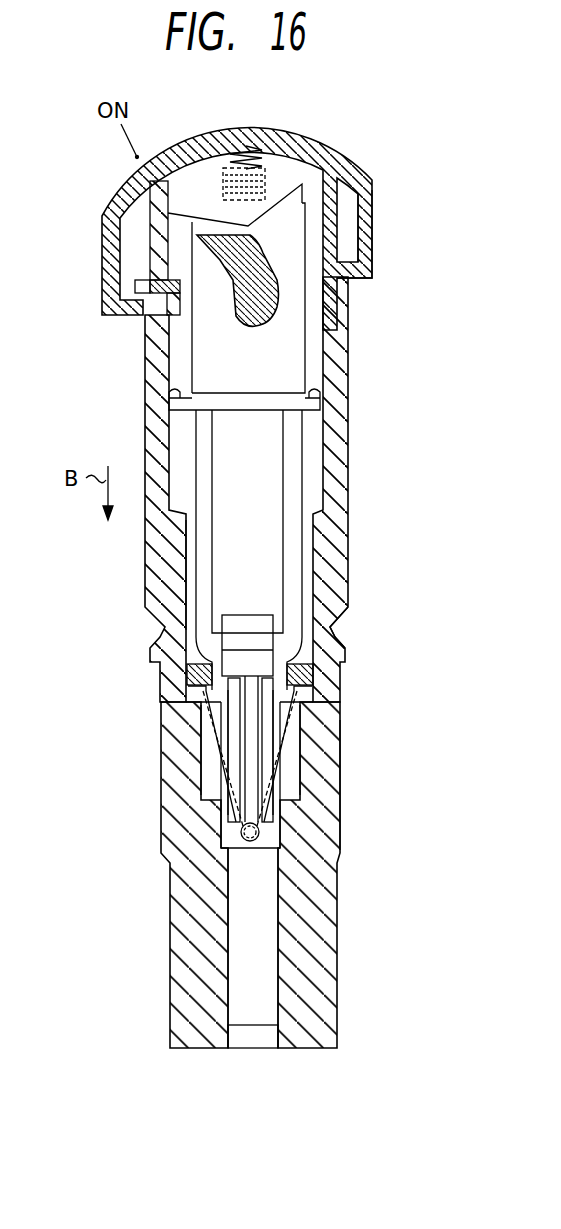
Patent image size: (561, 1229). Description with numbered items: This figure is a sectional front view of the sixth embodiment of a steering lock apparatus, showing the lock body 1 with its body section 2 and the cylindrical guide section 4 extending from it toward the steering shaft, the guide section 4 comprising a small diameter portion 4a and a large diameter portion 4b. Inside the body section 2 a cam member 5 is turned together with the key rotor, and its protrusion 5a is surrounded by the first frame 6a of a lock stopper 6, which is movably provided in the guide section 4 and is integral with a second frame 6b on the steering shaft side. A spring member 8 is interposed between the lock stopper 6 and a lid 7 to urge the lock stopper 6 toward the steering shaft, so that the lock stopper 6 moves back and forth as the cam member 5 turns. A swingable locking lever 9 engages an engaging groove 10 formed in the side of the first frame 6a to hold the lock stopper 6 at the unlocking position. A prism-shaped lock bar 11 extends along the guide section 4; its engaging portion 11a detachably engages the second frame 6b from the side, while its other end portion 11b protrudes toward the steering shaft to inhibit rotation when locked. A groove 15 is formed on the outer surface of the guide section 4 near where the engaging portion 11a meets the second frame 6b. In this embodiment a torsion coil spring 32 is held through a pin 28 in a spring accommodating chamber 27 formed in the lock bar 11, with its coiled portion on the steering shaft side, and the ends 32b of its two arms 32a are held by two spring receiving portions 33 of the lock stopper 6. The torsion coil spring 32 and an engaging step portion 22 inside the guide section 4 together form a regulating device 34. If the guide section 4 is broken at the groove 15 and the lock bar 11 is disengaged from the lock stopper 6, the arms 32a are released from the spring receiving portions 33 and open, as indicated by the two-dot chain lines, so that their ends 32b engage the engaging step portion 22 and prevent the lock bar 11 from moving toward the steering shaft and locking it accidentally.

The lock body 1 is at (378, 195).
The body section 2 is at (376, 240).
The guide section 4 is at (350, 566).
The small diameter portion 4a is at (228, 886).
The large diameter portion 4b is at (185, 564).
The cam member 5 is at (278, 308).
The protrusion 5a is at (185, 233).
The lock stopper 6 is at (292, 446).
The first frame 6a is at (316, 364).
The second frame 6b is at (296, 552).
The lid 7 is at (300, 130).
The spring member 8 is at (266, 146).
The locking lever 9 is at (137, 288).
The engaging groove 10 is at (146, 318).
The lock bar 11 is at (268, 890).
The engaging portion 11a is at (270, 640).
The other end portion 11b is at (266, 1014).
The groove 15 is at (346, 615).
The engaging step portion 22 is at (172, 695).
The spring accommodating chamber 27 is at (238, 836).
The pin 28 is at (326, 836).
The torsion coil spring 32 is at (302, 808).
The arms 32a is at (224, 746).
The ends 32b is at (190, 676).
The spring receiving portions 33 is at (185, 688).
The regulating device 34 is at (302, 792).